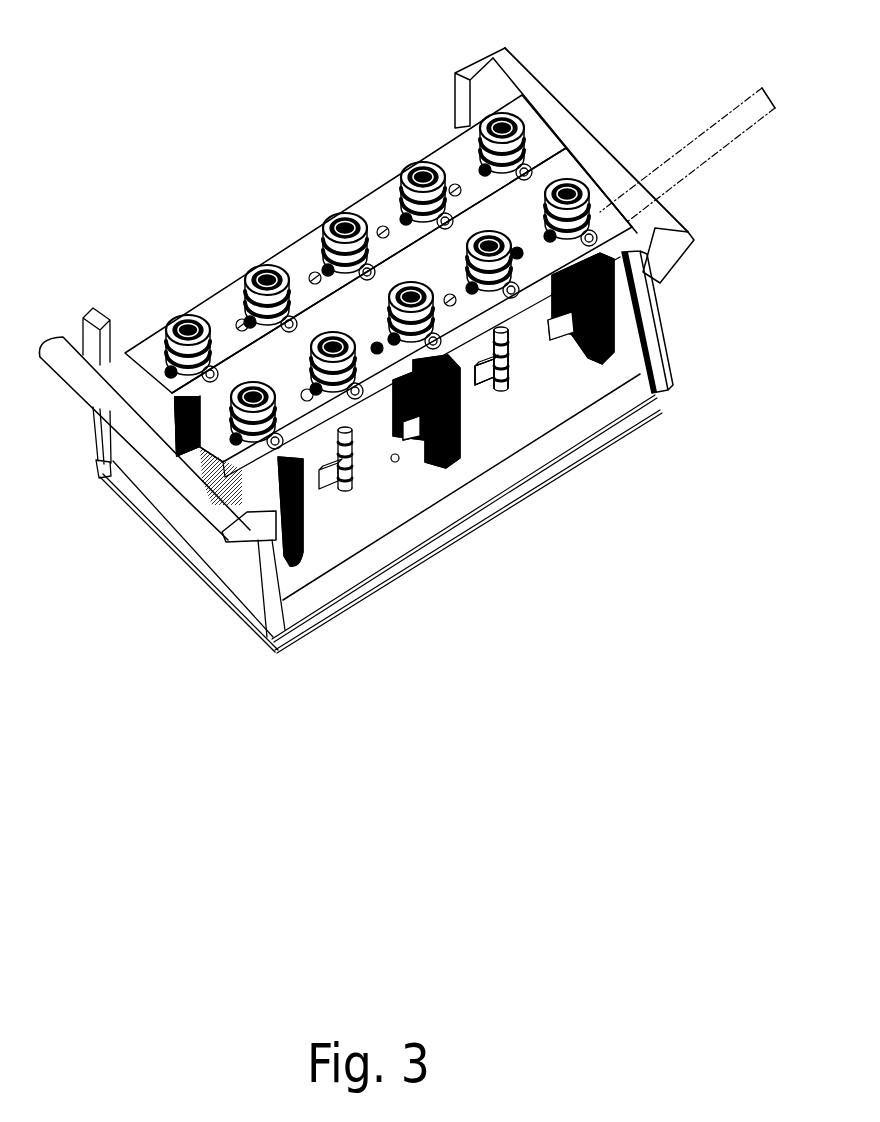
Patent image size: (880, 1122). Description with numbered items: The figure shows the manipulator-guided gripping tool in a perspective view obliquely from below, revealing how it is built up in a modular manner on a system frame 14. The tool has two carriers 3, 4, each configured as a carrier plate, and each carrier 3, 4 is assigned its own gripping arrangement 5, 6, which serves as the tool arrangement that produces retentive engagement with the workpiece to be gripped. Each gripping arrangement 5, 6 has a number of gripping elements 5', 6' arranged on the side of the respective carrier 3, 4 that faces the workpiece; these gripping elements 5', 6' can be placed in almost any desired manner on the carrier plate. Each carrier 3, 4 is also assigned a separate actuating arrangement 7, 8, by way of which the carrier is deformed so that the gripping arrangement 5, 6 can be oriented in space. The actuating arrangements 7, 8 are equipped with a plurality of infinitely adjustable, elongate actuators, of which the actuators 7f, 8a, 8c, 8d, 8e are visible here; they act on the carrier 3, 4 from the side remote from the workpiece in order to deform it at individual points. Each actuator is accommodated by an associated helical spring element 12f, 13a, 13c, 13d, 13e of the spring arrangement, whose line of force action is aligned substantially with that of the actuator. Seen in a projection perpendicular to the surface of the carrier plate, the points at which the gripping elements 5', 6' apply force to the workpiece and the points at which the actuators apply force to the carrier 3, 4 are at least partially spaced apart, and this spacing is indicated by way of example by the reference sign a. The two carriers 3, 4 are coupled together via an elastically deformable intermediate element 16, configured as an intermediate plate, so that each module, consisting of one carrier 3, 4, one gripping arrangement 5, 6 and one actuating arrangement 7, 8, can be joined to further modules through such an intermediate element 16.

The carrier 3 is at (380, 192).
The intermediate element 16 is at (480, 205).
The gripping element 5' is at (381, 226).
The gripping arrangement 5 is at (571, 129).
The gripping arrangement 6 is at (604, 145).
The spacing a is at (768, 89).
The carrier 4 is at (630, 228).
The gripping element 6' is at (524, 473).
The system frame 14 is at (655, 367).
The actuator 8a is at (600, 380).
The spring element 13a is at (668, 366).
The actuator 8c is at (455, 482).
The spring element 13c is at (571, 474).
The actuator 8d is at (388, 436).
The spring element 13d is at (491, 526).
The actuator 8e is at (308, 565).
The spring element 13e is at (339, 602).
The actuator 7f is at (158, 424).
The spring element 12f is at (153, 343).
The actuating arrangement 7 is at (160, 492).
The actuating arrangement 8 is at (232, 562).